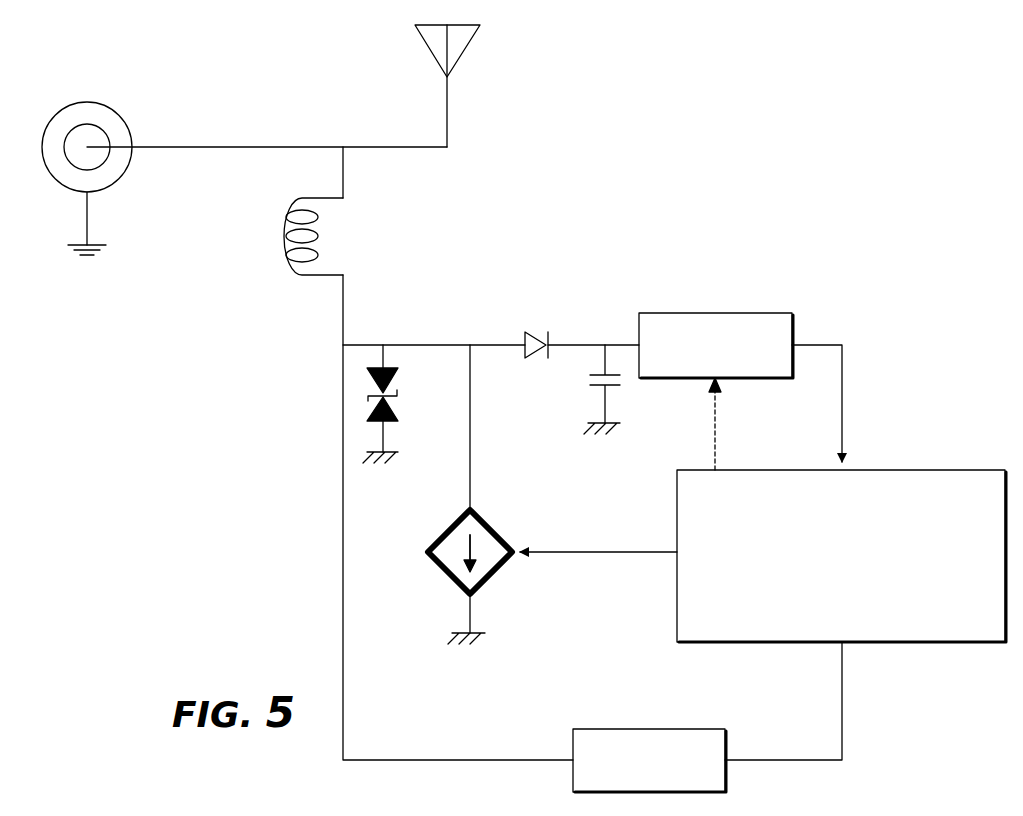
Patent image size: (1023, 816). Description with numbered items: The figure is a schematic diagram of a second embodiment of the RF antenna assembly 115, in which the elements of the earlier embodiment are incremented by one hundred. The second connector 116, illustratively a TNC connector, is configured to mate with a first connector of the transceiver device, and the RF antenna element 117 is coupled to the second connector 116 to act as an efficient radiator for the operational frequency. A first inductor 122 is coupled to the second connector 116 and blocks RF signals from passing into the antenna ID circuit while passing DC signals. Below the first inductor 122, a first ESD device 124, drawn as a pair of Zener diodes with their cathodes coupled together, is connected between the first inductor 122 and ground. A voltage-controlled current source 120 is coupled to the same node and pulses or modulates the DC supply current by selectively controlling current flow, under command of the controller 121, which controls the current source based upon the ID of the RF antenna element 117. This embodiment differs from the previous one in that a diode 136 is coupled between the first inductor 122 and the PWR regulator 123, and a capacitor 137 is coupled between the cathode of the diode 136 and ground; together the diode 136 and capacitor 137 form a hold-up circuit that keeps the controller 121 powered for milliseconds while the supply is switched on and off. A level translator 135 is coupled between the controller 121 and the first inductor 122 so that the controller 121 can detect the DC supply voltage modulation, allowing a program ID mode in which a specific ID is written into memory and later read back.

The RF antenna assembly 115 is at (872, 152).
The second connector 116 is at (118, 128).
The RF antenna element 117 is at (462, 52).
The voltage-controlled current source 120 is at (492, 530).
The controller 121 is at (826, 574).
The first inductor 122 is at (318, 238).
The PWR regulator 123 is at (718, 313).
The first ESD device 124 is at (378, 377).
The level translator 135 is at (652, 729).
The diode 136 is at (538, 333).
The capacitor 137 is at (613, 372).